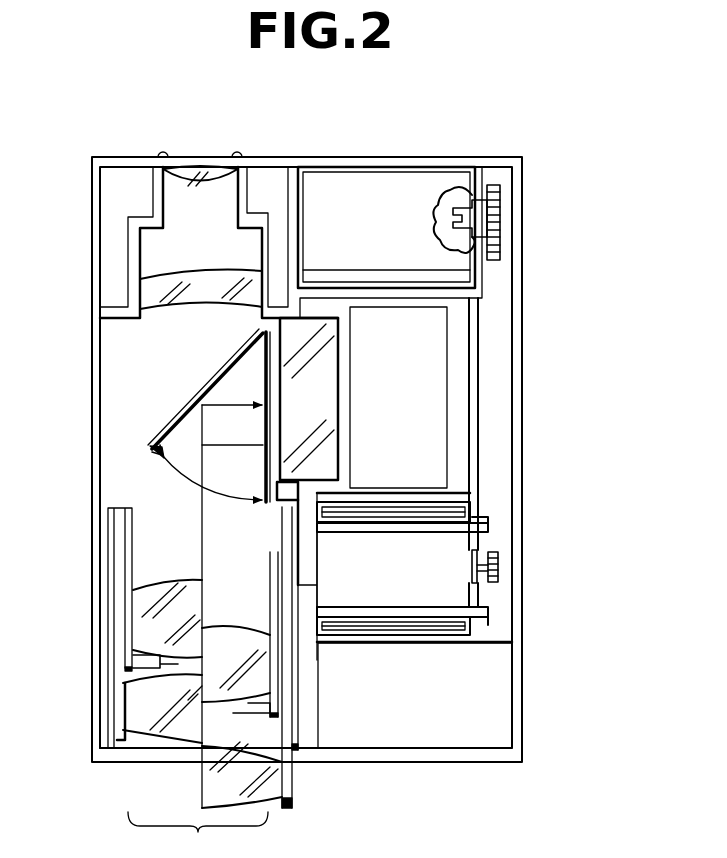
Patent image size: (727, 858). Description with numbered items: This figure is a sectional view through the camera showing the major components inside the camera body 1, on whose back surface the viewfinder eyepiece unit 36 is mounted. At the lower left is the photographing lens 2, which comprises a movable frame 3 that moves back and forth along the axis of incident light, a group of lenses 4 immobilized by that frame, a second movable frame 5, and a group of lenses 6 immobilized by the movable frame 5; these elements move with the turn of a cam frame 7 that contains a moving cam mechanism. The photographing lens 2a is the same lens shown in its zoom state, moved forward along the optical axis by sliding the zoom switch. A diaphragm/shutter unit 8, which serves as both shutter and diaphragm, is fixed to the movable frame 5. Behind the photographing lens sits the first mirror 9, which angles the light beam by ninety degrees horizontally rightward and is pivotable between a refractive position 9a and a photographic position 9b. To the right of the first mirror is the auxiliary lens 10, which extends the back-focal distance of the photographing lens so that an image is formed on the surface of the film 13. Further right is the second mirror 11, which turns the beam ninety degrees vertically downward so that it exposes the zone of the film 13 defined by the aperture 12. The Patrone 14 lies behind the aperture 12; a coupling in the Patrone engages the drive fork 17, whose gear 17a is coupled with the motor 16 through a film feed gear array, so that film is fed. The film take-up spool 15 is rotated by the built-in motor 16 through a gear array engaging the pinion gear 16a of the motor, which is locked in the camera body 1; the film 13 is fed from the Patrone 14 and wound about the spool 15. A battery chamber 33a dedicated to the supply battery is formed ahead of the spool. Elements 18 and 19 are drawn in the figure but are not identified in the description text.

The camera body 1 is at (318, 160).
The photographing lens 2 is at (203, 631).
The photographing lens in zoom state 2a is at (300, 794).
The movable frame 3 is at (140, 722).
The group of lenses 4 is at (140, 740).
The movable frame 5 is at (130, 607).
The group of lenses 6 is at (143, 633).
The cam frame 7 is at (108, 555).
The diaphragm/shutter unit 8 is at (122, 683).
The first mirror 9 is at (160, 426).
The refractive position 9a is at (263, 445).
The photographic position 9b is at (195, 395).
The auxiliary lens 10 is at (328, 468).
The second mirror 11 is at (433, 367).
The aperture 12 is at (435, 413).
The film 13 is at (473, 503).
The Patrone 14 is at (438, 183).
The film take-up spool 15 is at (443, 623).
The motor 16 is at (458, 595).
The pinion gear 16a is at (498, 562).
The drive fork 17 is at (475, 172).
The gear 17a is at (488, 240).
The objective lens 18 is at (150, 294).
The front lens 19 is at (165, 172).
The battery chamber 33a is at (500, 703).
The viewfinder eyepiece unit 36 is at (238, 157).